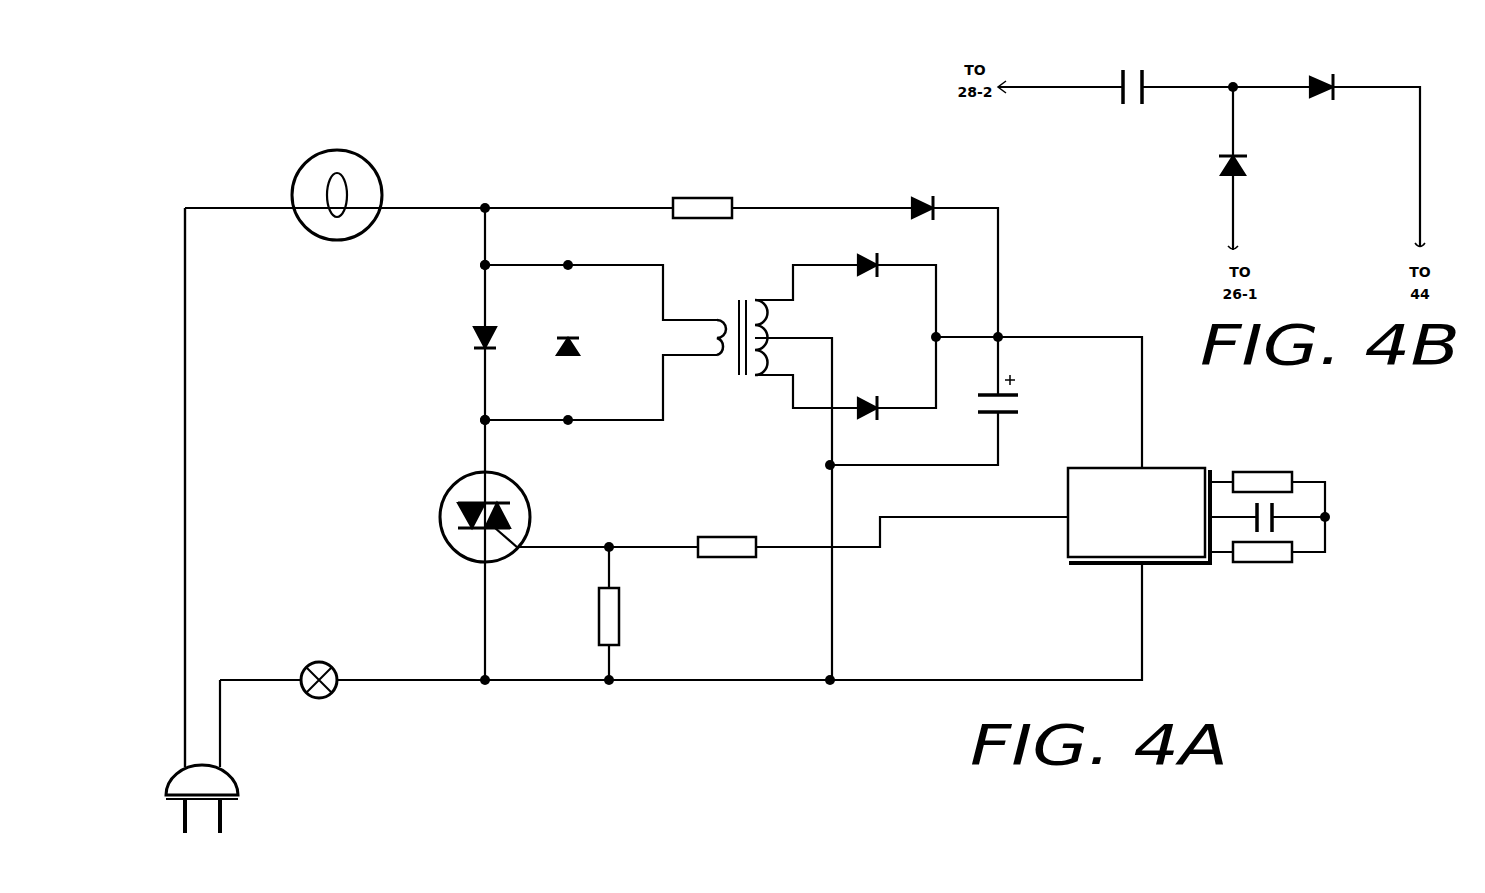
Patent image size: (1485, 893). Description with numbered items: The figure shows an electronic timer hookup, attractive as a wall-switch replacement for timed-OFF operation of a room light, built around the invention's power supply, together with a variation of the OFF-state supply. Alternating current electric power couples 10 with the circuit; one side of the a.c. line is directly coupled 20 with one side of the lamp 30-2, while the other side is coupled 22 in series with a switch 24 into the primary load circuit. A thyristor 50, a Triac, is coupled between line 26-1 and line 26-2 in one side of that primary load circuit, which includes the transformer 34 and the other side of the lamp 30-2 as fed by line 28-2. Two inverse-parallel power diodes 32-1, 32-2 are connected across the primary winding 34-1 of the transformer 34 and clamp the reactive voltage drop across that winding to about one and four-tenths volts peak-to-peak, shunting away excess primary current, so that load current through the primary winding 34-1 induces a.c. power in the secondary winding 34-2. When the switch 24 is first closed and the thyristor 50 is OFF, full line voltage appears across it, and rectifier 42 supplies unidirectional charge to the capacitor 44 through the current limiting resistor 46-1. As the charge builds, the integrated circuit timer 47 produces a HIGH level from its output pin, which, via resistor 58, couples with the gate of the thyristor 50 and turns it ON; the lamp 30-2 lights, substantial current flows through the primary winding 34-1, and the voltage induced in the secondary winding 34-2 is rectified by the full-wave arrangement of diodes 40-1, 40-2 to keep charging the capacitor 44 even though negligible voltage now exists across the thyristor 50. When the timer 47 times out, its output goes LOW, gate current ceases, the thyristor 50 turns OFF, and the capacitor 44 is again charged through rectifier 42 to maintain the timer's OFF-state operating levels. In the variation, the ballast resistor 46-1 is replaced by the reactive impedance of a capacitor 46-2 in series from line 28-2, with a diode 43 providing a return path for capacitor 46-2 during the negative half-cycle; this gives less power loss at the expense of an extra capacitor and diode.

In FIG. 4A, the alternating current electric power coupling 10 is at (243, 792).
In FIG. 4A, the direct coupling to primary load 20 is at (181, 641).
In FIG. 4A, the series coupling line 22 is at (270, 676).
In FIG. 4A, the switch 24 is at (320, 660).
In FIG. 4A, the line 26-1 is at (417, 676).
In FIG. 4A, the line 26-2 is at (476, 418).
In FIG. 4A, the line 28-2 is at (481, 247).
In FIG. 4A, the lamp 30-2 is at (384, 189).
In FIG. 4A, the power diode 32-1 is at (472, 327).
In FIG. 4A, the power diode 32-2 is at (590, 346).
In FIG. 4A, the transformer 34 is at (737, 348).
In FIG. 4A, the primary winding 34-1 is at (712, 343).
In FIG. 4A, the secondary winding 34-2 is at (798, 350).
In FIG. 4A, the rectifier diode 40-1 is at (862, 253).
In FIG. 4A, the rectifier diode 40-2 is at (865, 386).
In FIG. 4A, the rectifier 42 is at (918, 191).
In FIG. 4B, the rectifier 42 is at (1341, 75).
In FIG. 4B, the diode 43 is at (1216, 166).
In FIG. 4A, the capacitor 44 is at (1023, 401).
In FIG. 4A, the current limiting resistor 46-1 is at (705, 194).
In FIG. 4B, the capacitor 46-2 is at (1175, 55).
In FIG. 4A, the integrated circuit timer 47 is at (1181, 462).
In FIG. 4A, the thyristor 50 is at (442, 494).
In FIG. 4A, the resistor 58 is at (626, 624).